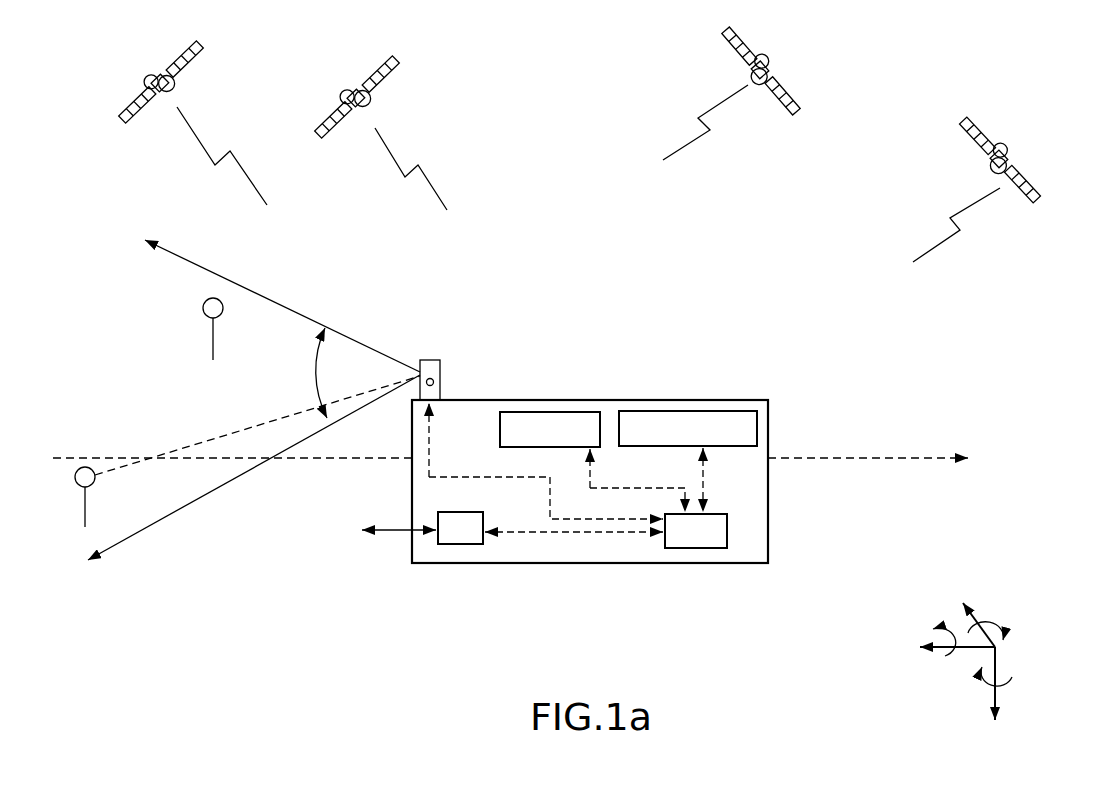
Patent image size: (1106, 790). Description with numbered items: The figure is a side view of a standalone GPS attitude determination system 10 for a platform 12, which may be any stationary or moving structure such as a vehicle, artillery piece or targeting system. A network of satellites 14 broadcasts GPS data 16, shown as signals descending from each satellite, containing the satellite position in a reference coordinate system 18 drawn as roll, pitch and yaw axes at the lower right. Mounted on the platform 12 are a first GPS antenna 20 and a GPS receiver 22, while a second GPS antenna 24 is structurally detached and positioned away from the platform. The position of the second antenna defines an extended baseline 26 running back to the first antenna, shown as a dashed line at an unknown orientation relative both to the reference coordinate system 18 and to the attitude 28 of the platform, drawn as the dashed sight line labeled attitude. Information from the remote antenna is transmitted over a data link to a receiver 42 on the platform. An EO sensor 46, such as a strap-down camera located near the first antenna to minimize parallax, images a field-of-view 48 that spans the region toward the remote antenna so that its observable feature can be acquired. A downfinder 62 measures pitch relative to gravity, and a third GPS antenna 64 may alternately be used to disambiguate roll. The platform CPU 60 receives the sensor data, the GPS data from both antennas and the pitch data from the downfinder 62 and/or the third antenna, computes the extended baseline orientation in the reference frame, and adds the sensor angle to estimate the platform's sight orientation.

The GPS attitude determination system 10 is at (347, 560).
The platform 12 is at (577, 564).
The satellites 14 is at (142, 95).
The GPS data 16 is at (187, 125).
The reference coordinate system 18 is at (1033, 655).
The first GPS antenna 20 is at (434, 382).
The GPS receiver 22 is at (585, 412).
The second GPS antenna 24 is at (80, 486).
The extended baseline 26 is at (245, 430).
The attitude 28 is at (845, 458).
The receiver 42 is at (460, 545).
The EO sensor 46 is at (440, 362).
The field-of-view 48 is at (318, 368).
The platform CPU 60 is at (683, 549).
The downfinder 62 is at (700, 411).
The third GPS antenna 64 is at (202, 306).